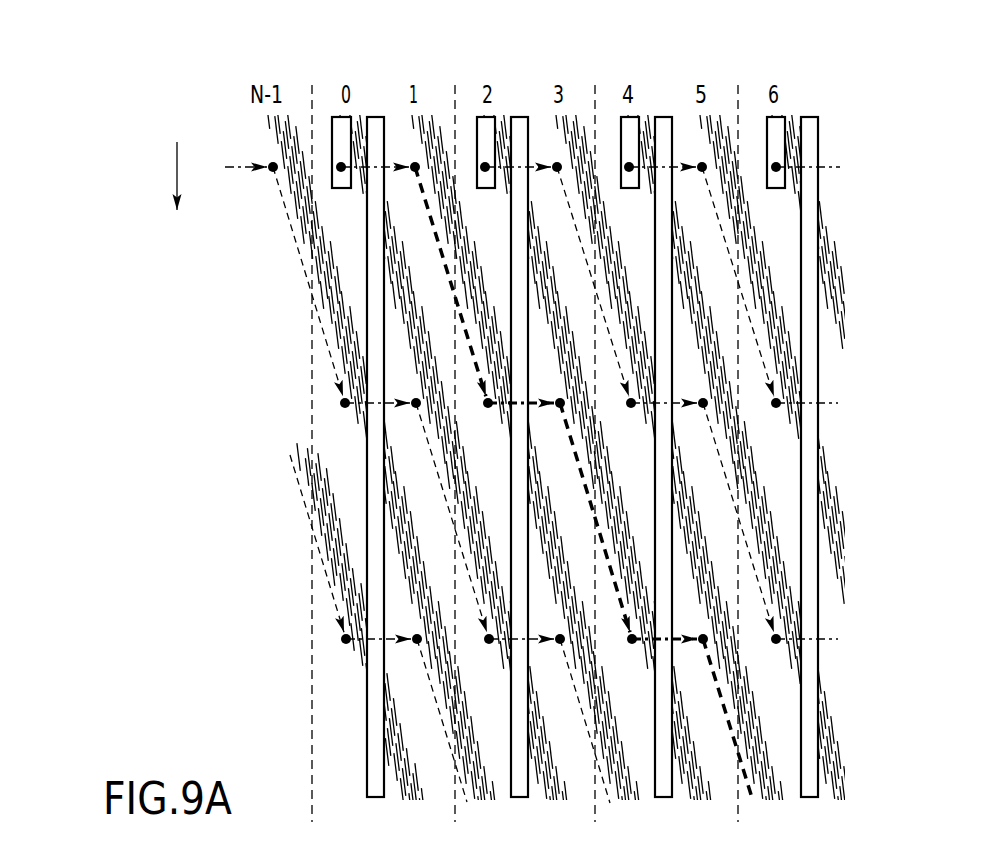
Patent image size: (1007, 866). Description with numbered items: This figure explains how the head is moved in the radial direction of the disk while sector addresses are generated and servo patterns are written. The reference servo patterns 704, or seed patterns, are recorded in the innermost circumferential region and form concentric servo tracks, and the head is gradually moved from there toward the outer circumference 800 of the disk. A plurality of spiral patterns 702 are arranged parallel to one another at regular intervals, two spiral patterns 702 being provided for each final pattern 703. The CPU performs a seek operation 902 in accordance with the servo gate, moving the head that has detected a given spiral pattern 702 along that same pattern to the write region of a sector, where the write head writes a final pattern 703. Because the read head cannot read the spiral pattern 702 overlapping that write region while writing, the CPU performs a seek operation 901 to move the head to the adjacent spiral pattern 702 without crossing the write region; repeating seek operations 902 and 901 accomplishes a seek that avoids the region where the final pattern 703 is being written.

The spiral pattern 702 is at (289, 130).
The final pattern 703 is at (373, 493).
The reference servo pattern 704 is at (335, 113).
The outer circumference 800 is at (176, 180).
The seek operation 901 is at (402, 130).
The seek operation 902 is at (292, 250).